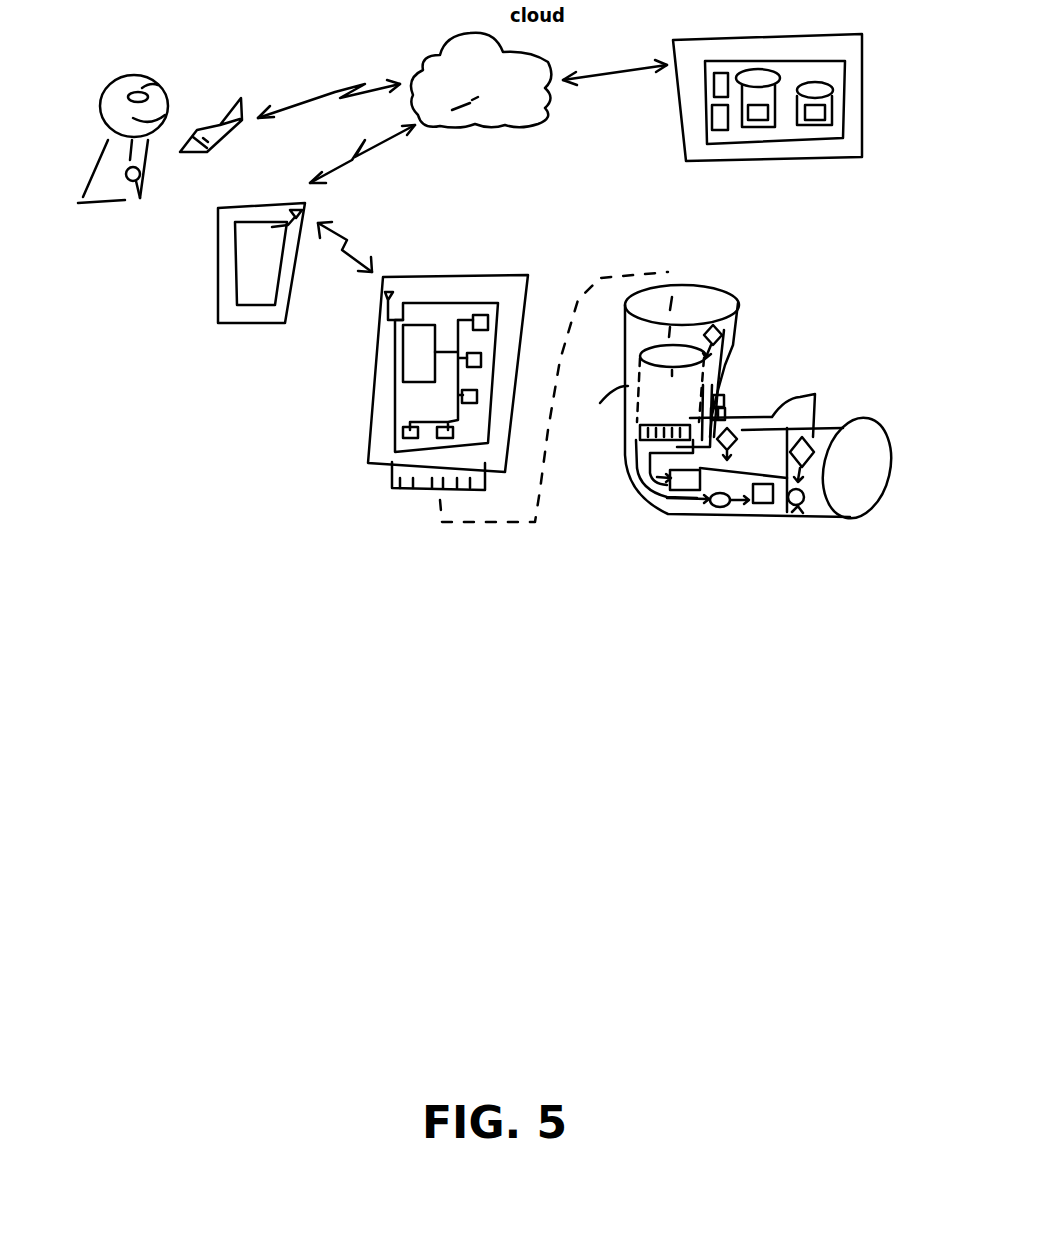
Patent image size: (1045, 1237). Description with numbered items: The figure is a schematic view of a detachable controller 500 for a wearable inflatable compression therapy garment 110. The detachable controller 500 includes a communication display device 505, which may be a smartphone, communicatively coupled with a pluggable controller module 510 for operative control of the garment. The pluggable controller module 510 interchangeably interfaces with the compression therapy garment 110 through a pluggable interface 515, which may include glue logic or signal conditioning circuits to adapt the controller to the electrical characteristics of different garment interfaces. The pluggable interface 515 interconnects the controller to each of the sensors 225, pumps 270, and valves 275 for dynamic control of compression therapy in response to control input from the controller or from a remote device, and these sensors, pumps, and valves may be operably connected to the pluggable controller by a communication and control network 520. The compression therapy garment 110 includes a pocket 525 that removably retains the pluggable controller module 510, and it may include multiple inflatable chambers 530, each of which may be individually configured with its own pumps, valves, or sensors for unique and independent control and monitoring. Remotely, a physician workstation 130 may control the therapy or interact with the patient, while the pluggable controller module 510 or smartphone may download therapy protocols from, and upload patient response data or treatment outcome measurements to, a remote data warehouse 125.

The physician workstation 130 is at (87, 104).
The remote data warehouse 125 is at (816, 20).
The communication display device 505 is at (206, 303).
The pluggable controller module 510 is at (525, 250).
The communication and control network 520 is at (450, 385).
The pluggable interface 515 is at (376, 494).
The pocket 525 is at (632, 420).
The compression therapy garment 110 is at (740, 283).
The inflatable chamber 530 is at (738, 318).
The sensor 225 is at (733, 345).
The pump 270 is at (738, 400).
The valve 275 is at (805, 513).
The detachable controller 500 is at (216, 485).